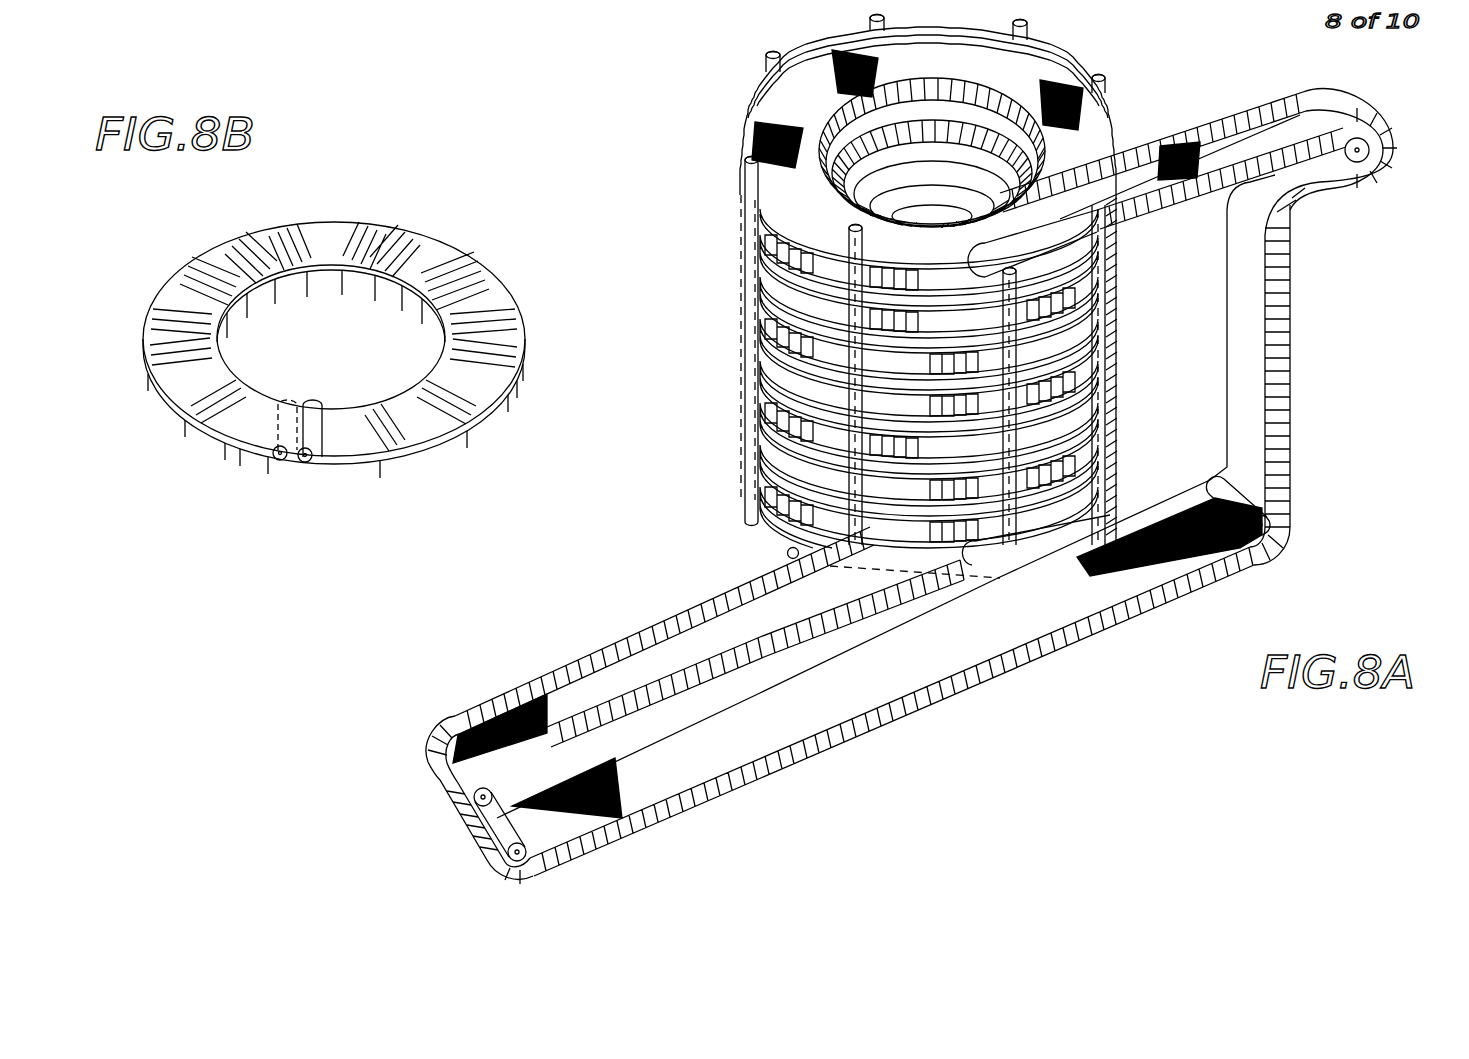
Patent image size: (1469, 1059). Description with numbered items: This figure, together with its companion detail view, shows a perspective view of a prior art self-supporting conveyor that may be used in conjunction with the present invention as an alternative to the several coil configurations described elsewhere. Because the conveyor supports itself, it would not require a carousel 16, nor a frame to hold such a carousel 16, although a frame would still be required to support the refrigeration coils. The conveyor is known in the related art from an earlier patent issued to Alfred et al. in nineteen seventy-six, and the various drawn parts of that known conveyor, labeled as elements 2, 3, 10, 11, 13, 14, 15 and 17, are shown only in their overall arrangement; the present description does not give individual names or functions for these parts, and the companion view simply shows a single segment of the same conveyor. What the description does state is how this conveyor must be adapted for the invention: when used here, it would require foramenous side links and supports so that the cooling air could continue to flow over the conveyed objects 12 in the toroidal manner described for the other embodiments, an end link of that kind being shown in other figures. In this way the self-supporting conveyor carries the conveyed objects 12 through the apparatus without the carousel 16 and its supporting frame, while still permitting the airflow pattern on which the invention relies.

In FIG. 8B, the annular ring 2 is at (453, 237).
In FIG. 8A, the annular ring 2 is at (765, 530).
In FIG. 8B, the roller 3 is at (278, 460).
In FIG. 8A, the roller 3 is at (787, 555).
In FIG. 8A, the plate 10 is at (1070, 520).
In FIG. 8A, the post 11 is at (772, 50).
In FIG. 8A, the conveyed objects 12 is at (1068, 250).
In FIG. 8A, the roller 13 is at (473, 807).
In FIG. 8A, the chain 14 is at (540, 688).
In FIG. 8A, the chain 15 is at (1343, 110).
In FIG. 8A, the carousel 16 is at (1247, 510).
In FIG. 8A, the roller 17 is at (1380, 173).